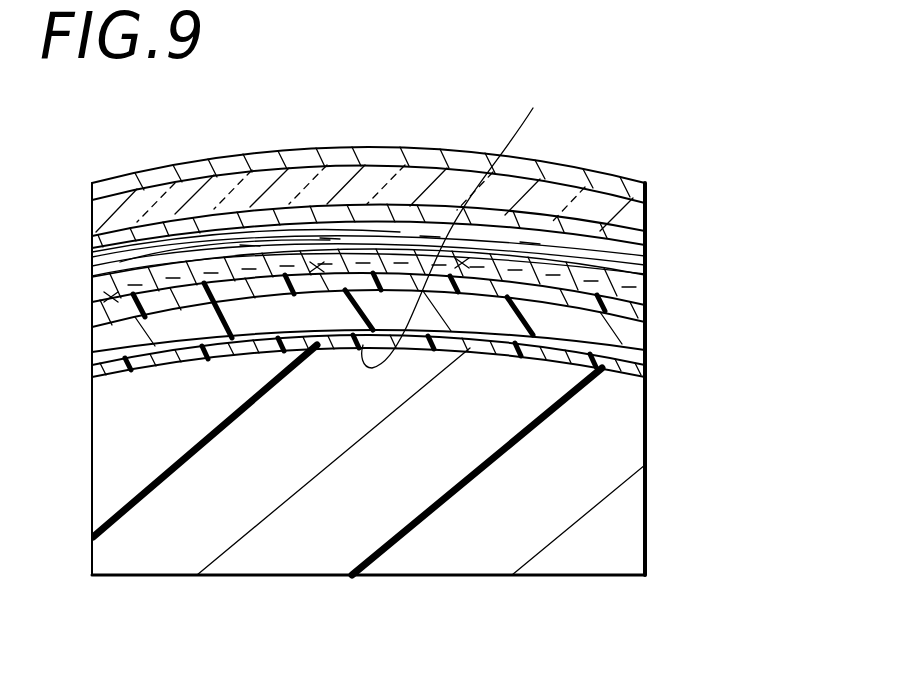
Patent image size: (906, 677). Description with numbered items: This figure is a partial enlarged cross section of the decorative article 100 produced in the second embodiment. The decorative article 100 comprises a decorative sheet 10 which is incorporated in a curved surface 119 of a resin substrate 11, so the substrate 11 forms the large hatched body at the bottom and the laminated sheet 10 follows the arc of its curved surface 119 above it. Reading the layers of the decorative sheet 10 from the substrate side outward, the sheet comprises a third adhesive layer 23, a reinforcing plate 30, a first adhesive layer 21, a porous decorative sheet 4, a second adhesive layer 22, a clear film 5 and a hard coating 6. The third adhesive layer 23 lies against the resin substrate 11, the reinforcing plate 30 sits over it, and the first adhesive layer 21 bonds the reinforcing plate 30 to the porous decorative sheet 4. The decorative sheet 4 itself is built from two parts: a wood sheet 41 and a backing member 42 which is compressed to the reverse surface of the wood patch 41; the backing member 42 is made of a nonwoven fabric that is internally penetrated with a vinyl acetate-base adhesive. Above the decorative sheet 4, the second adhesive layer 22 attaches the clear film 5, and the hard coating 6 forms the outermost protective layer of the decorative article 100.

The decorative article 100 is at (667, 537).
The decorative sheet 10 is at (81, 183).
The resin substrate 11 is at (147, 448).
The hard coating 6 is at (627, 181).
The clear film 5 is at (623, 222).
The second adhesive layer 22 is at (647, 250).
The porous decorative sheet 4 is at (758, 259).
The wood sheet 41 is at (633, 281).
The backing member 42 is at (647, 307).
The first adhesive layer 21 is at (647, 323).
The reinforcing plate 30 is at (647, 343).
The third adhesive layer 23 is at (621, 345).
The curved surface 119 is at (474, 221).